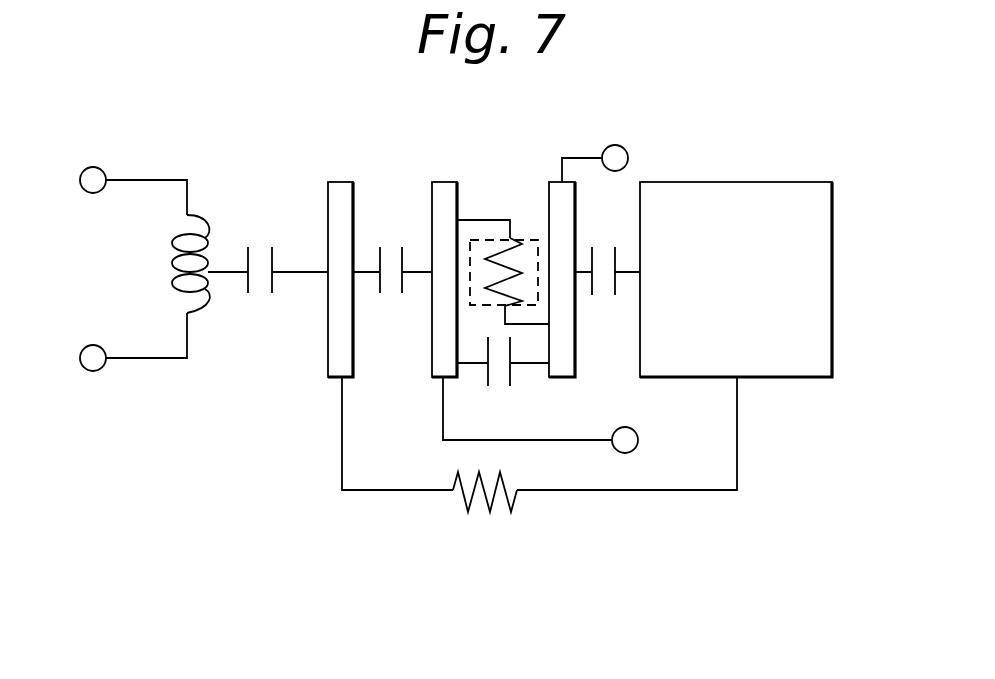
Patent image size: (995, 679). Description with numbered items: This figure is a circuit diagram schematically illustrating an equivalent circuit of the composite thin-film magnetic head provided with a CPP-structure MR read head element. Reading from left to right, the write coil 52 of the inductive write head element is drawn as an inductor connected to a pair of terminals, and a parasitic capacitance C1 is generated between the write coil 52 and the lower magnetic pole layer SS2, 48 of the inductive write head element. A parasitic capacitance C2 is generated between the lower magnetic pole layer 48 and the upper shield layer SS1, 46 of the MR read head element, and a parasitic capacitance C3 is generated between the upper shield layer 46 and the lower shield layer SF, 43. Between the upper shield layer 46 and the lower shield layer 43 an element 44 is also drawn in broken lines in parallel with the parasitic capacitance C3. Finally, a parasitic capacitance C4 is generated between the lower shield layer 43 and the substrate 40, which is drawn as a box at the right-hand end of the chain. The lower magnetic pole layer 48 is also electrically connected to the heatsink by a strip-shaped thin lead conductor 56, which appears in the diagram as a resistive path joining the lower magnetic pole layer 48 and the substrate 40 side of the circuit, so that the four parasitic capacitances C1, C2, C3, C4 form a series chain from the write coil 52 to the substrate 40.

The substrate 40 is at (718, 196).
The lower shield layer 43 is at (586, 249).
The variable resistor 44 is at (527, 238).
The upper shield layer 46 is at (421, 254).
The lower magnetic pole layer 48 is at (314, 254).
The write coil 52 is at (197, 217).
The lead conductor 56 is at (487, 513).
The parasitic capacitance C1 is at (268, 290).
The parasitic capacitance C2 is at (392, 290).
The parasitic capacitance C3 is at (503, 380).
The parasitic capacitance C4 is at (607, 291).
The upper shield layer SS1 is at (438, 218).
The lower magnetic pole layer SS2 is at (339, 218).
The lower shield layer SF is at (567, 236).